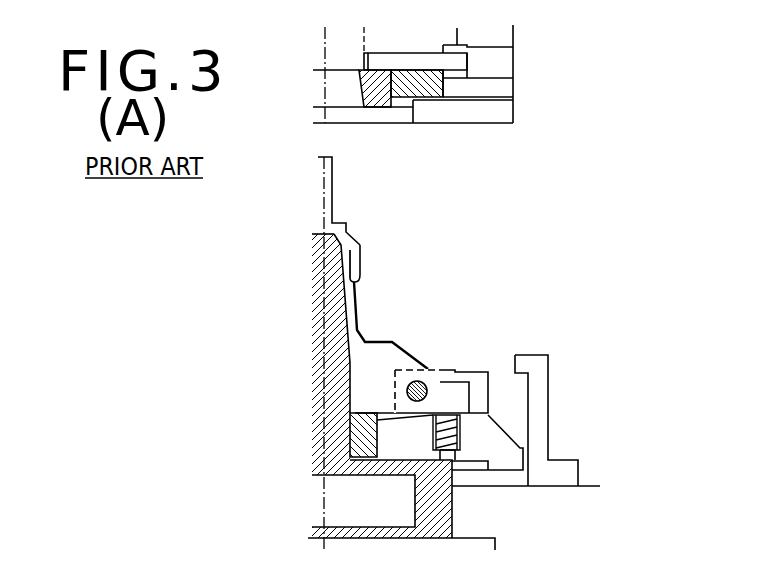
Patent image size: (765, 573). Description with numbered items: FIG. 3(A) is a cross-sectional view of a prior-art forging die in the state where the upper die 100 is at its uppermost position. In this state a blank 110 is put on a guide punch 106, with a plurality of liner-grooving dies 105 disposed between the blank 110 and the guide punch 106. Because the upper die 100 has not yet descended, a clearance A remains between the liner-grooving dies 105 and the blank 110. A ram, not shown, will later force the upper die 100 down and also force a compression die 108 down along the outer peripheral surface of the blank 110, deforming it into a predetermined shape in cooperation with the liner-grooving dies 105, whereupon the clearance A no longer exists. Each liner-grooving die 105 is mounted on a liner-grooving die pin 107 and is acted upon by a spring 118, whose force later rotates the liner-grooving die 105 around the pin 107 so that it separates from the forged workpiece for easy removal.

The upper die 100 is at (497, 36).
The compression die 108 is at (373, 102).
The blank 110 is at (357, 246).
The liner-grooving die 105 is at (343, 257).
The clearance A is at (357, 276).
The guide punch 106 is at (330, 310).
The liner-grooving die pin 107 is at (420, 381).
The spring 118 is at (448, 428).